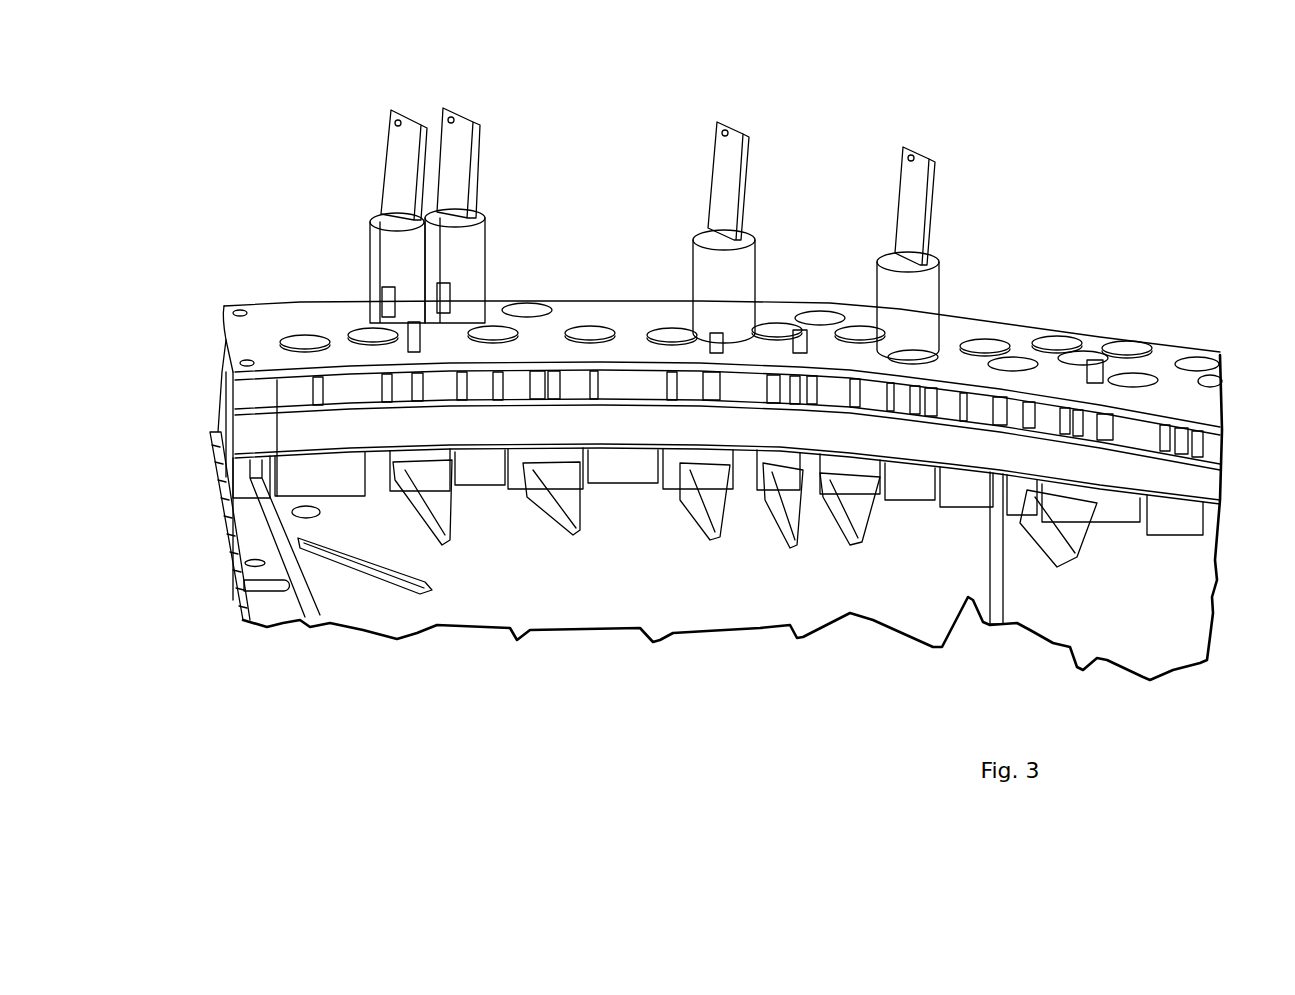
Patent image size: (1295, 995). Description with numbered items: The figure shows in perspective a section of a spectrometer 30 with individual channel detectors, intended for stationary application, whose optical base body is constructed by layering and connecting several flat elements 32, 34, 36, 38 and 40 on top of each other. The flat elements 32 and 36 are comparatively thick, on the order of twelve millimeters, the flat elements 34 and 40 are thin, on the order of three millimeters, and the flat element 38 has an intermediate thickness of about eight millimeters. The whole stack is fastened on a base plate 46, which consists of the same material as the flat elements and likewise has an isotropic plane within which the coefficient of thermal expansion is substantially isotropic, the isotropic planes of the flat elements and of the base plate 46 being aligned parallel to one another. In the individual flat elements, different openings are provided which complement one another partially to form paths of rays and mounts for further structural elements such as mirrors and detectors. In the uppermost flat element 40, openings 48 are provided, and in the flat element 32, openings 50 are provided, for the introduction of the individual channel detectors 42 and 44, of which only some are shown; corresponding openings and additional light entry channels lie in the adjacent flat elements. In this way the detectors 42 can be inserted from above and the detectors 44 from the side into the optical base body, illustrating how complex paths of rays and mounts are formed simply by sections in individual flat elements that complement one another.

The spectrometer 30 is at (1203, 133).
The flat element 32 is at (218, 422).
The flat element 34 is at (217, 398).
The flat element 36 is at (218, 362).
The flat element 38 is at (218, 333).
The flat element 40 is at (270, 313).
The individual channel detector 42 is at (390, 258).
The individual channel detector 44 is at (438, 487).
The base plate 46 is at (283, 614).
The opening 48 is at (988, 348).
The opening 50 is at (913, 485).